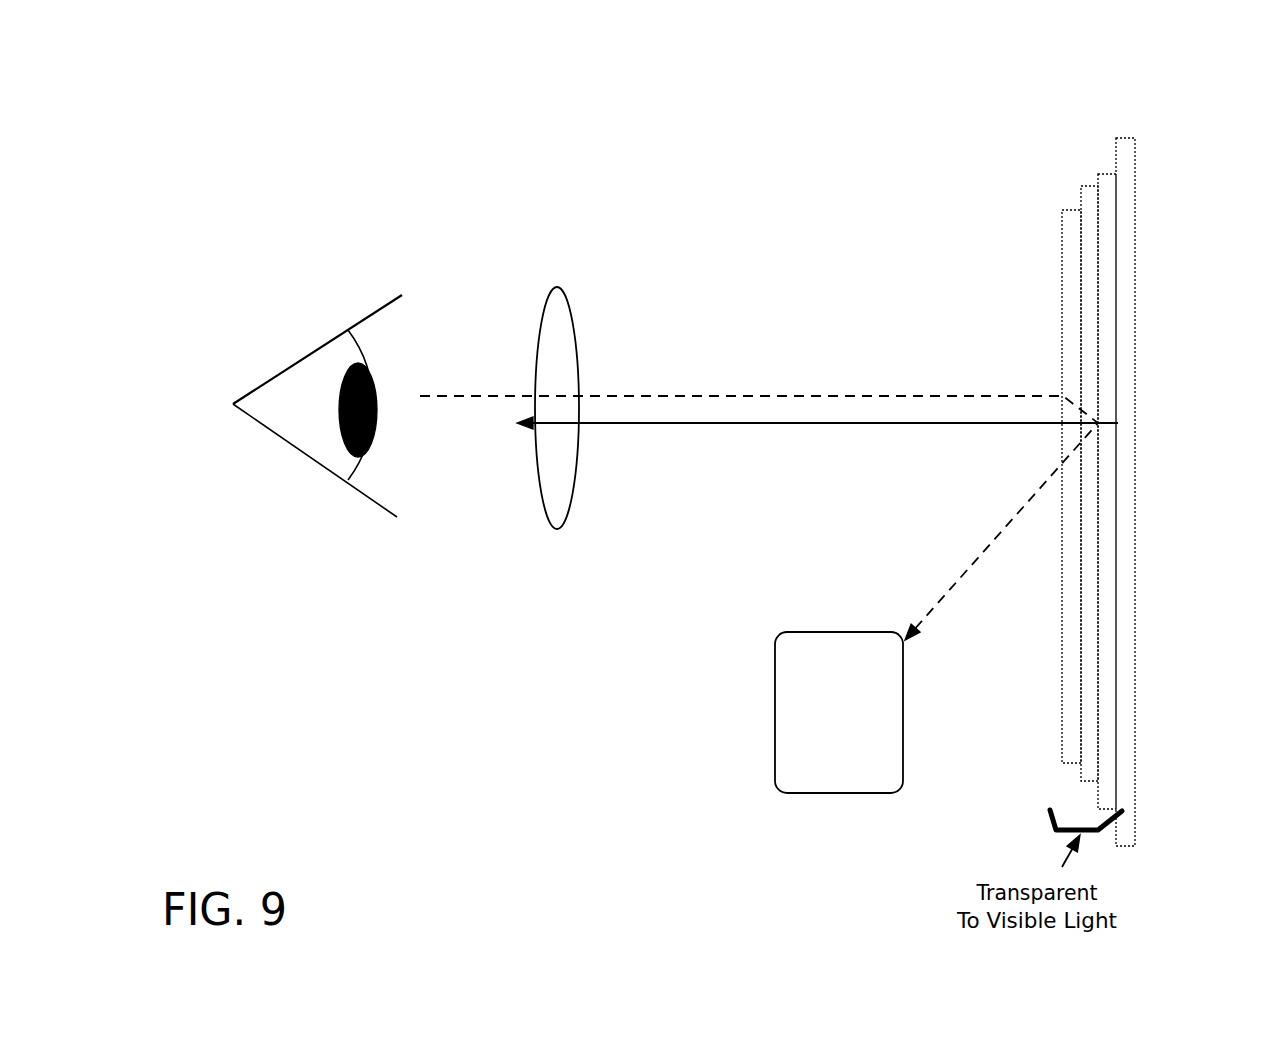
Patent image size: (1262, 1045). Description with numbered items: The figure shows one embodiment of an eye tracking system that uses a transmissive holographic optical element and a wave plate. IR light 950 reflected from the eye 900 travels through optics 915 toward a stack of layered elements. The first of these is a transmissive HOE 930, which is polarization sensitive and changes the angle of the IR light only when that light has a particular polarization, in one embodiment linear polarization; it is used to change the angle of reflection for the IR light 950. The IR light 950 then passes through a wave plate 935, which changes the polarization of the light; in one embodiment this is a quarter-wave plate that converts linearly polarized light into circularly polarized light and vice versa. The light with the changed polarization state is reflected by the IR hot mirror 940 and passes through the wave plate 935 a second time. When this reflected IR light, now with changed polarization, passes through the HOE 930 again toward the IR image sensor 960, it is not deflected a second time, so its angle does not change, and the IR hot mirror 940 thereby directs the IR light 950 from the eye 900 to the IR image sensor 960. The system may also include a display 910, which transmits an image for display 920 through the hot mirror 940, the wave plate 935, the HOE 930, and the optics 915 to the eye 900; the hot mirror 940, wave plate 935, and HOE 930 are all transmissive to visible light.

The eye 900 is at (317, 392).
The display 910 is at (1178, 492).
The optics 915 is at (546, 368).
The image for display 920 is at (817, 447).
The transmissive HOE 930 is at (1046, 248).
The wave plate 935 is at (1066, 184).
The IR hot mirror 940 is at (1105, 157).
The IR light 950 is at (759, 486).
The IR image sensor 960 is at (839, 712).